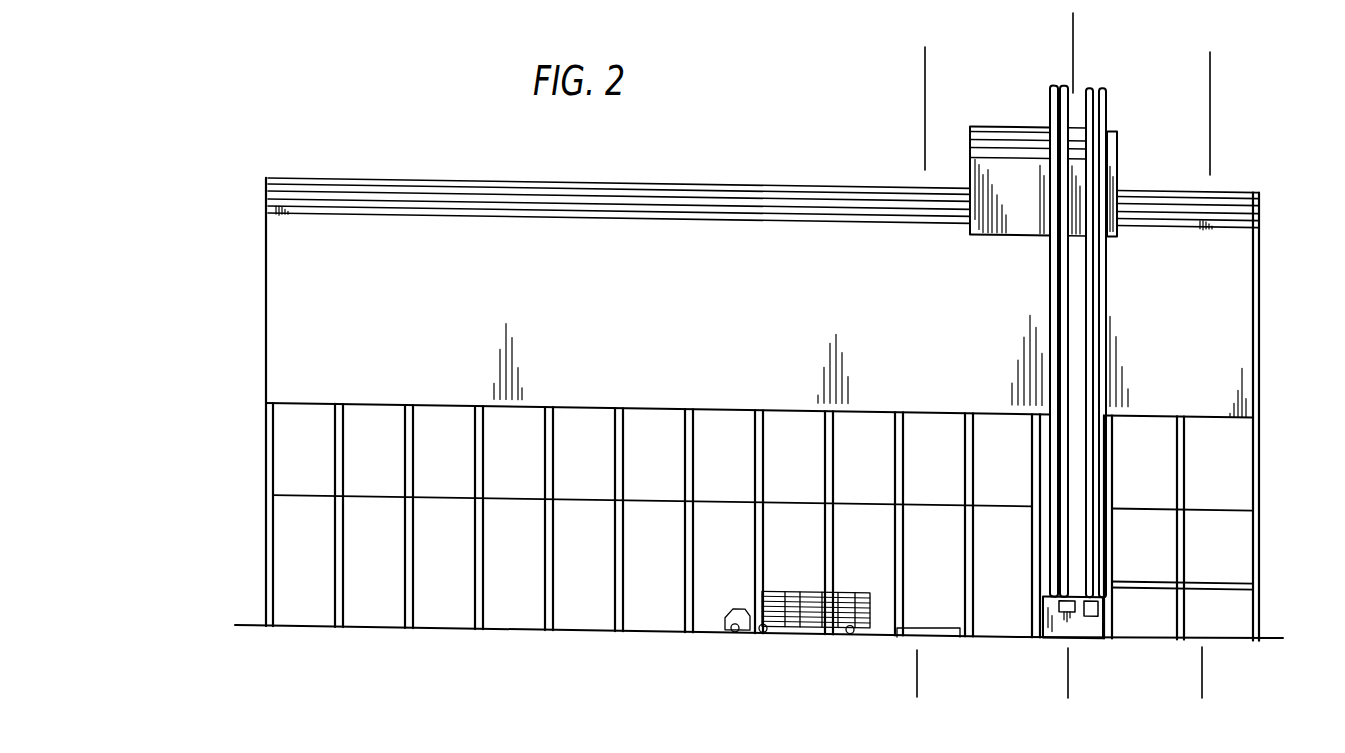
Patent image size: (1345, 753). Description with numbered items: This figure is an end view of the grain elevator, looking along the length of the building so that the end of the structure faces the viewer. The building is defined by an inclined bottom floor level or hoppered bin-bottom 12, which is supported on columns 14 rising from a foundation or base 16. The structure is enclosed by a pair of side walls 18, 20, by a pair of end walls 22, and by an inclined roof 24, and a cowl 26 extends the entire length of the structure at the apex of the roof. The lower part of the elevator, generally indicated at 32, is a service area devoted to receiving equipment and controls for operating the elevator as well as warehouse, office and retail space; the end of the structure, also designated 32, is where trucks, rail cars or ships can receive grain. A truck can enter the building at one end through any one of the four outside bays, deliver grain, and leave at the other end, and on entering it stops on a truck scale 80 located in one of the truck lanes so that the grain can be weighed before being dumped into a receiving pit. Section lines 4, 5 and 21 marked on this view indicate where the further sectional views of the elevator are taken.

The section line 4- 4 is at (1073, 13).
The section line 5- 5 is at (925, 47).
The hoppered bin-bottom 12 is at (286, 527).
The columns 14 is at (468, 573).
The base 16 is at (284, 621).
The side wall 18 is at (1263, 470).
The side wall 20 is at (261, 449).
The section line 21- 21 is at (1210, 52).
The end walls 22 is at (715, 487).
The inclined roof 24 is at (287, 256).
The cowl 26 is at (508, 148).
The service area 32 is at (525, 596).
The truck scale 80 is at (938, 624).